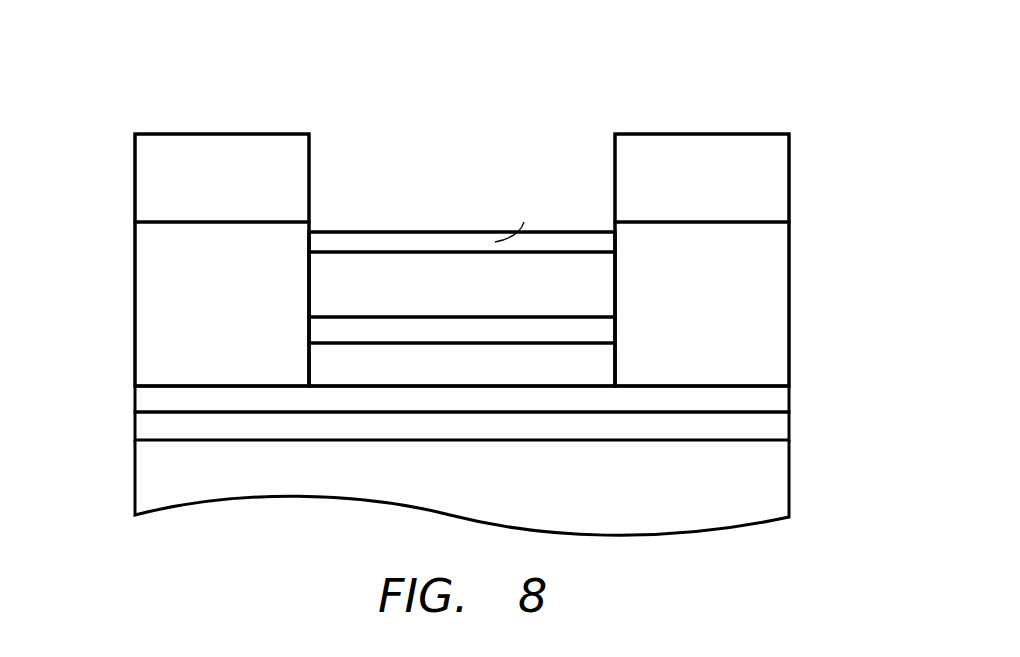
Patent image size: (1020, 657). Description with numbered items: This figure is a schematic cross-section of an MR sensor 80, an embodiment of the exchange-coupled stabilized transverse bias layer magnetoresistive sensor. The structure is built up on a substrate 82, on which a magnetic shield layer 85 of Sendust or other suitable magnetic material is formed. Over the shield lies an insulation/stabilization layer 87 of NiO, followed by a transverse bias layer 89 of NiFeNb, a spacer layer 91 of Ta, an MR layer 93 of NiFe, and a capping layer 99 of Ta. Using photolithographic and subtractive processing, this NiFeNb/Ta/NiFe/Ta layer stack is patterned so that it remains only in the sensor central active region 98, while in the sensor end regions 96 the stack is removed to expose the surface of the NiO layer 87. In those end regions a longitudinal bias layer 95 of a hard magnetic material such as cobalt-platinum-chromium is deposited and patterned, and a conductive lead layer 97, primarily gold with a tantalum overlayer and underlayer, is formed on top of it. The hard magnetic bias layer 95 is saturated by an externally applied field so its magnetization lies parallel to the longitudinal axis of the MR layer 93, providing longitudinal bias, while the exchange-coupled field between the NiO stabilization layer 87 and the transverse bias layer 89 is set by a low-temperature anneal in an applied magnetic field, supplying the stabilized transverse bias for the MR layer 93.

The MR sensor 80 is at (104, 351).
The substrate 82 is at (775, 503).
The magnetic shield layer 85 is at (790, 440).
The insulation/stabilization layer 87 is at (790, 400).
The transverse bias layer 89 is at (603, 361).
The spacer layer 91 is at (603, 331).
The MR layer 93 is at (603, 267).
The longitudinal bias layer 95 is at (135, 263).
The sensor end regions 96 is at (214, 92).
The conductive lead layer 97 is at (277, 133).
The sensor central active region 98 is at (500, 177).
The capping layer 99 is at (388, 237).